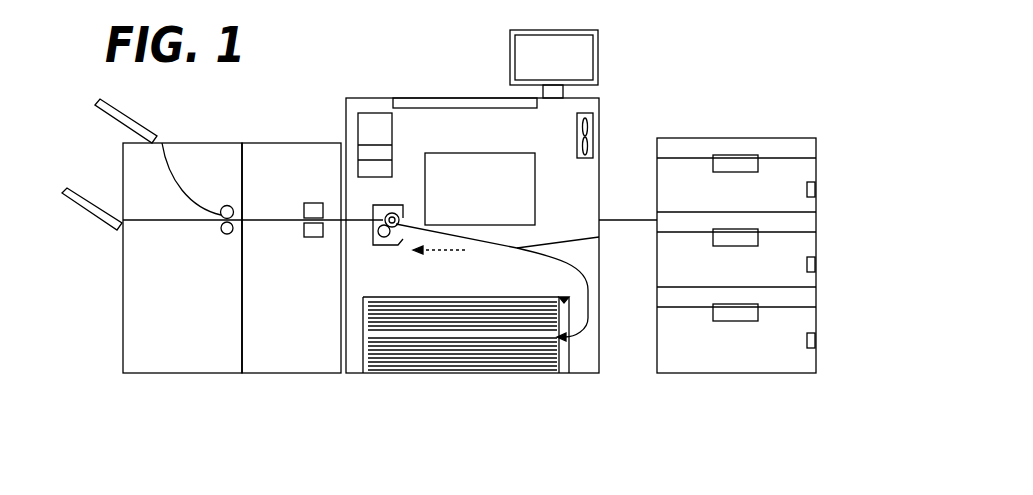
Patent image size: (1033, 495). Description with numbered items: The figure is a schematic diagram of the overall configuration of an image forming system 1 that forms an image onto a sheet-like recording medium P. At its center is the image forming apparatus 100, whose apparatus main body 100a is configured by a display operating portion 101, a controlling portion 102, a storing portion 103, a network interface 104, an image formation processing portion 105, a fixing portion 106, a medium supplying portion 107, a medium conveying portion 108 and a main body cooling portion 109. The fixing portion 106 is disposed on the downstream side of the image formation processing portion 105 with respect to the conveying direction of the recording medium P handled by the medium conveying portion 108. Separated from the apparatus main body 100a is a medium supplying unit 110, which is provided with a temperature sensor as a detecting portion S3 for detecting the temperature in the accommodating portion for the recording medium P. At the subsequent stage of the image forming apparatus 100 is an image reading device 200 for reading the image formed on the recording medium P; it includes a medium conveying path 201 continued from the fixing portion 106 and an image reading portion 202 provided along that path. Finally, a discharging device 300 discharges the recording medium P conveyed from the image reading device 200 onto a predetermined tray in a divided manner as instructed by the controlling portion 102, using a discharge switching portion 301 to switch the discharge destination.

The image forming system 1 is at (456, 249).
The image forming apparatus 100 is at (814, 423).
The apparatus main body 100a is at (520, 375).
The display operating portion 101 is at (599, 43).
The controlling portion 102 is at (364, 113).
The storing portion 103 is at (393, 152).
The network interface 104 is at (393, 167).
The image formation processing portion 105 is at (563, 192).
The fixing portion 106 is at (380, 246).
The medium supplying portion 107 is at (575, 355).
The medium conveying portion 108 is at (478, 243).
The main body cooling portion 109 is at (623, 118).
The medium supplying unit 110 is at (781, 138).
The image reading device 200 is at (282, 375).
The medium conveying path 201 is at (257, 218).
The image reading portion 202 is at (303, 211).
The discharging device 300 is at (165, 375).
The discharge switching portion 301 is at (224, 236).
The detecting portion S3 is at (817, 190).
The recording medium P is at (428, 300).